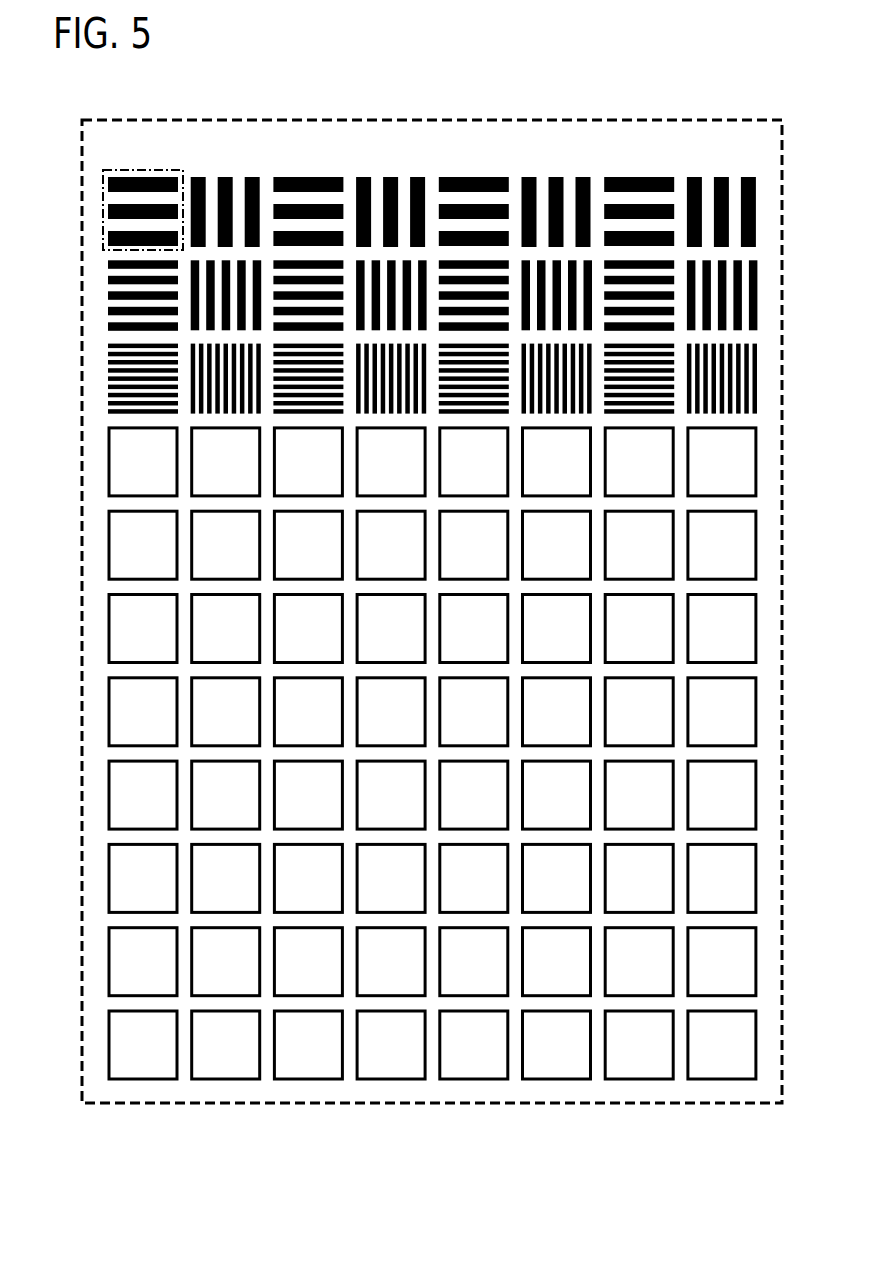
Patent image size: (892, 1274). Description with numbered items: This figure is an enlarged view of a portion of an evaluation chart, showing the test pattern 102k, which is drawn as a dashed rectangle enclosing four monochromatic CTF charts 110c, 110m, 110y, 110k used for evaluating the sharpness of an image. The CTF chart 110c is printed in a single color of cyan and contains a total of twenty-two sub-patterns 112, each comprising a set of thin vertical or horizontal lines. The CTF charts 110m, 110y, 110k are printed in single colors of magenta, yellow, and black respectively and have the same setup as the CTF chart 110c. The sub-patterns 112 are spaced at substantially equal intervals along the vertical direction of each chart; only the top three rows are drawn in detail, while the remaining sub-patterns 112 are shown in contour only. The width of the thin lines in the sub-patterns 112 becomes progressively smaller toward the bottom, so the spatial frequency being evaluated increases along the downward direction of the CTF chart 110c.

The test pattern 102k is at (388, 120).
The sub-pattern 112 is at (128, 170).
The CTF chart 110c is at (261, 1118).
The CTF chart 110m is at (426, 1118).
The CTF chart 110y is at (592, 1118).
The CTF chart 110k is at (757, 1118).